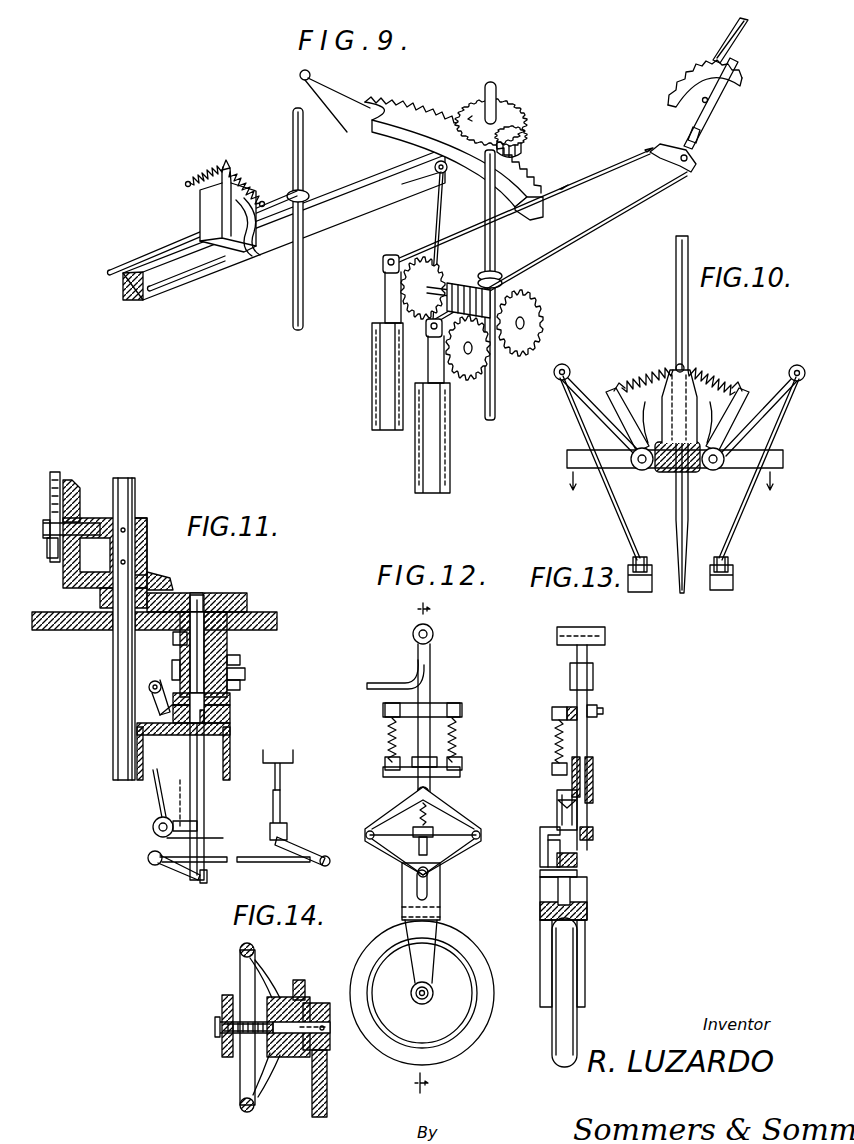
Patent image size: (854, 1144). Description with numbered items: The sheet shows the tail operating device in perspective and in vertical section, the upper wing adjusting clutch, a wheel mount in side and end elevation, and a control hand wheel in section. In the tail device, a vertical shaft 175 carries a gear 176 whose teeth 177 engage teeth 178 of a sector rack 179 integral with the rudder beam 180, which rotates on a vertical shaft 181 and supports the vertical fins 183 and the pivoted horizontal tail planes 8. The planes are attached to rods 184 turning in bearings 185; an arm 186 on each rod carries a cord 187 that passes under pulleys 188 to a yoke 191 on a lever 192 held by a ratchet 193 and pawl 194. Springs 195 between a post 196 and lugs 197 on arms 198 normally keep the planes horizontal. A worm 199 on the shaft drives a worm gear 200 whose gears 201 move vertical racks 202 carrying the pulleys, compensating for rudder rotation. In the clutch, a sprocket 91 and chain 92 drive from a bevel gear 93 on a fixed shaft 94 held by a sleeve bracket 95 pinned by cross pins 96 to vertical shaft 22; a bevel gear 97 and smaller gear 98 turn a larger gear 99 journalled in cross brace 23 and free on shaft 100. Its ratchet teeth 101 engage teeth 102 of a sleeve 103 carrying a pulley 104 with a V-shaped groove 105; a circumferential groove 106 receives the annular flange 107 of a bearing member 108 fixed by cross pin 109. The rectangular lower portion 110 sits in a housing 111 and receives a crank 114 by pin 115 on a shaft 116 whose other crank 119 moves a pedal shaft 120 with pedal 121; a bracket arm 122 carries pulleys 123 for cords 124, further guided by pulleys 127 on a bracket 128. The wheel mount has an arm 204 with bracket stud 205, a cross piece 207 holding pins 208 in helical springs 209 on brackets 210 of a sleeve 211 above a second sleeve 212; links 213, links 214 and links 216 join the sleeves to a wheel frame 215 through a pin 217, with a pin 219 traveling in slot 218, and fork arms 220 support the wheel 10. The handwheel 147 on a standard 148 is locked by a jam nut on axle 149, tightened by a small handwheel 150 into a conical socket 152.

In FIG. 10, the horizontal tail planes 8 is at (562, 456).
In FIG. 12, the wheel 10 is at (480, 968).
In FIG. 13, the wheel 10 is at (578, 1015).
In FIG. 11, the vertical shaft 22 is at (136, 492).
In FIG. 11, the cross brace 23 is at (278, 621).
In FIG. 11, the sprocket 91 is at (47, 548).
In FIG. 11, the endless chain 92 is at (50, 486).
In FIG. 11, the bevel gear 93 is at (74, 481).
In FIG. 11, the fixed shaft 94 is at (86, 523).
In FIG. 11, the sleeve bracket 95 is at (148, 524).
In FIG. 11, the cross pins 96 is at (148, 558).
In FIG. 11, the bevel gear 97 is at (172, 583).
In FIG. 11, the smaller gear 98 is at (100, 600).
In FIG. 11, the larger gear 99 is at (240, 594).
In FIG. 11, the shaft 100 is at (228, 655).
In FIG. 11, the ratchet teeth 101 is at (174, 645).
In FIG. 11, the ratchet teeth 102 is at (240, 662).
In FIG. 11, the sleeve 103 is at (240, 686).
In FIG. 11, the pulley 104 is at (172, 670).
In FIG. 11, the V-shaped groove 105 is at (246, 674).
In FIG. 11, the circumferential groove 106 is at (230, 712).
In FIG. 11, the annular flange 107 is at (230, 700).
In FIG. 11, the bearing member 108 is at (231, 730).
In FIG. 11, the cross pin 109 is at (208, 716).
In FIG. 11, the lower shaft portion 110 is at (205, 800).
In FIG. 11, the housing 111 is at (231, 762).
In FIG. 11, the crank 114 is at (178, 874).
In FIG. 11, the pin 115 is at (207, 878).
In FIG. 11, the shaft 116 is at (262, 863).
In FIG. 11, the crank 119 is at (305, 848).
In FIG. 11, the pedal shaft 120 is at (282, 800).
In FIG. 11, the pedal 121 is at (294, 756).
In FIG. 11, the bracket arm 122 is at (176, 800).
In FIG. 11, the pulleys 123 is at (160, 836).
In FIG. 11, the cords 124 is at (155, 800).
In FIG. 11, the pulleys 127 is at (148, 688).
In FIG. 11, the bracket 128 is at (160, 712).
In FIG. 14, the handwheel 147 is at (262, 978).
In FIG. 14, the standard 148 is at (232, 1000).
In FIG. 14, the axle 149 is at (302, 1012).
In FIG. 14, the small handwheel 150 is at (222, 1052).
In FIG. 14, the conical socket 152 is at (276, 1075).
In FIG. 9, the vertical shaft 175 is at (485, 204).
In FIG. 9, the gear 176 is at (514, 112).
In FIG. 9, the gear teeth 177 is at (528, 138).
In FIG. 9, the rack teeth 178 is at (532, 172).
In FIG. 9, the sector rack 179 is at (412, 114).
In FIG. 9, the rudder beam 180 is at (124, 288).
In FIG. 10, the rudder beam 180 is at (692, 472).
In FIG. 9, the vertical shaft 181 is at (292, 118).
In FIG. 10, the vertical fins 183 is at (688, 328).
In FIG. 9, the rods 184 is at (153, 252).
In FIG. 9, the bearings 185 is at (318, 165).
In FIG. 10, the bearings 185 is at (641, 471).
In FIG. 9, the arm 186 is at (392, 105).
In FIG. 10, the arm 186 is at (610, 392).
In FIG. 9, the cord 187 is at (608, 178).
In FIG. 10, the cord 187 is at (608, 518).
In FIG. 9, the pulleys 188 is at (392, 254).
In FIG. 10, the pulleys 188 is at (632, 560).
In FIG. 9, the yoke 191 is at (697, 162).
In FIG. 9, the lever 192 is at (707, 90).
In FIG. 9, the ratchet 193 is at (732, 70).
In FIG. 9, the pawl 194 is at (740, 38).
In FIG. 9, the springs 195 is at (200, 178).
In FIG. 10, the springs 195 is at (684, 366).
In FIG. 9, the post 196 is at (214, 206).
In FIG. 10, the post 196 is at (698, 400).
In FIG. 9, the lugs 197 is at (208, 198).
In FIG. 10, the lugs 197 is at (632, 382).
In FIG. 9, the arms 198 is at (248, 258).
In FIG. 10, the arms 198 is at (658, 412).
In FIG. 9, the worm 199 is at (508, 282).
In FIG. 9, the worm gear 200 is at (465, 282).
In FIG. 9, the gears 201 is at (536, 306).
In FIG. 9, the vertical racks 202 is at (380, 307).
In FIG. 10, the vertical racks 202 is at (642, 594).
In FIG. 12, the arm 204 is at (432, 672).
In FIG. 13, the arm 204 is at (590, 672).
In FIG. 12, the bracket stud 205 is at (388, 674).
In FIG. 13, the bracket stud 205 is at (570, 672).
In FIG. 12, the cross piece 207 is at (434, 704).
In FIG. 13, the cross piece 207 is at (604, 712).
In FIG. 12, the pins 208 is at (462, 706).
In FIG. 13, the pins 208 is at (560, 706).
In FIG. 12, the helical springs 209 is at (386, 736).
In FIG. 13, the helical springs 209 is at (550, 743).
In FIG. 12, the brackets 210 is at (445, 776).
In FIG. 13, the brackets 210 is at (580, 817).
In FIG. 12, the sleeve 211 is at (432, 795).
In FIG. 13, the sleeve 211 is at (594, 783).
In FIG. 13, the second sleeve 212 is at (594, 835).
In FIG. 12, the links 213 is at (397, 810).
In FIG. 13, the links 213 is at (558, 810).
In FIG. 12, the links 214 is at (392, 862).
In FIG. 13, the links 214 is at (578, 861).
In FIG. 12, the wheel frame 215 is at (402, 902).
In FIG. 13, the wheel frame 215 is at (588, 906).
In FIG. 12, the links 216 is at (374, 830).
In FIG. 13, the links 216 is at (556, 828).
In FIG. 12, the pin 217 is at (446, 870).
In FIG. 13, the pin 217 is at (546, 850).
In FIG. 12, the slot 218 is at (428, 896).
In FIG. 13, the slot 218 is at (540, 903).
In FIG. 12, the pin 219 is at (417, 874).
In FIG. 13, the pin 219 is at (542, 875).
In FIG. 12, the fork arms 220 is at (410, 932).
In FIG. 13, the fork arms 220 is at (580, 950).